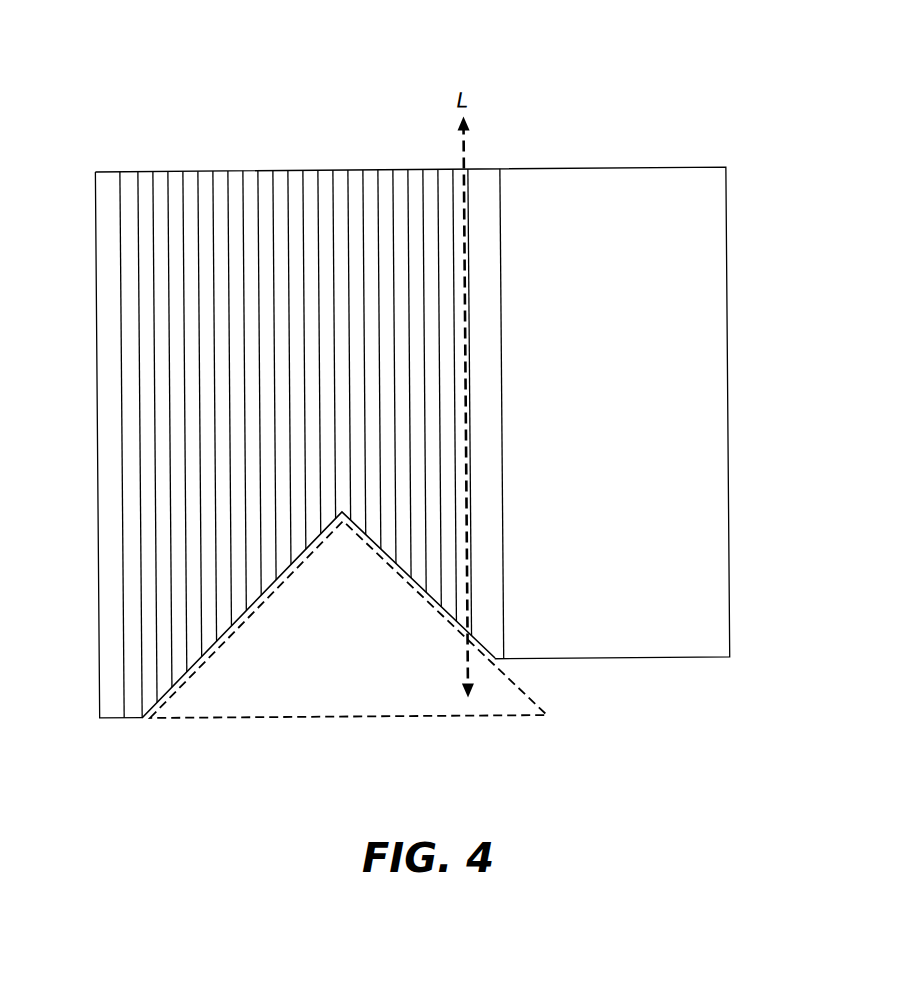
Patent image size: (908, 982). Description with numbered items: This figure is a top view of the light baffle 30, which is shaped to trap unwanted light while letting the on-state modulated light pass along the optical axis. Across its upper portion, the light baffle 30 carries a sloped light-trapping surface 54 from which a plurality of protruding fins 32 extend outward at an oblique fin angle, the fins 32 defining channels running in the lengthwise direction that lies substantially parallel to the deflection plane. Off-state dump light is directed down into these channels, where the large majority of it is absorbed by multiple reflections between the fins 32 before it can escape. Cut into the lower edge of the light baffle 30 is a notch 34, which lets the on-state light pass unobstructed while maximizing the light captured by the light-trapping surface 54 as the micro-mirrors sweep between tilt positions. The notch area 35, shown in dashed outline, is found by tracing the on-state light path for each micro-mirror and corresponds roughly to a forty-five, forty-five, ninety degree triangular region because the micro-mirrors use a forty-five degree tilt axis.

The light baffle 30 is at (821, 404).
The protruding fins 32 is at (202, 178).
The notch 34 is at (348, 538).
The notch area 35 is at (350, 717).
The light-trapping surface 54 is at (123, 81).